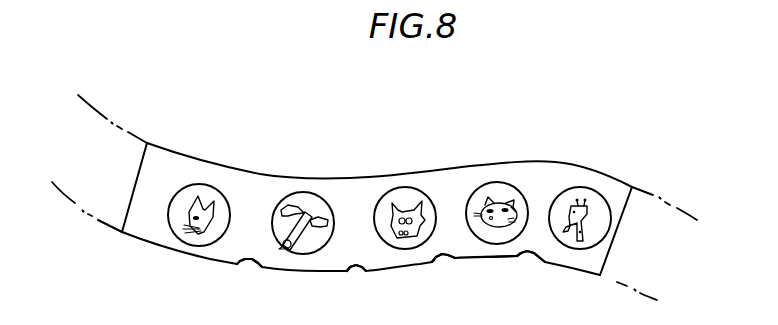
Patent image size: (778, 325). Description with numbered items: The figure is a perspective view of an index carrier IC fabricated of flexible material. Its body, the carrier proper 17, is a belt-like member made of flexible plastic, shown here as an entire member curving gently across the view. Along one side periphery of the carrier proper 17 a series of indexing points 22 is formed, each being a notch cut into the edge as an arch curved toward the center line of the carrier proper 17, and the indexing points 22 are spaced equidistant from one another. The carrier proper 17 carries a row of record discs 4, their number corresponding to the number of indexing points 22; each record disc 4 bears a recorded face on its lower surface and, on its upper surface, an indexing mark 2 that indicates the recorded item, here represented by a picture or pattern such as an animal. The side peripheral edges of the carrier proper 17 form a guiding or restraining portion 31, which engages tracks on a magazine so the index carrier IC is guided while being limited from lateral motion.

The guiding or restraining portion 31 is at (328, 178).
The carrier proper 17 is at (585, 180).
The indexing point 22 is at (252, 263).
The index carrier IC is at (496, 260).
The record disc 4 is at (423, 198).
The indexing mark 2 is at (408, 210).